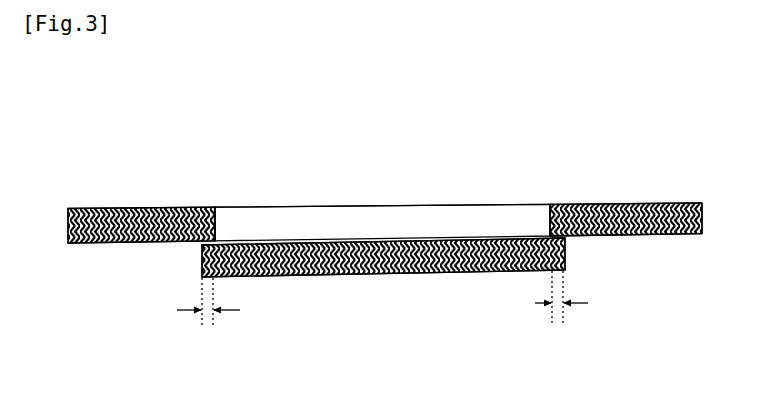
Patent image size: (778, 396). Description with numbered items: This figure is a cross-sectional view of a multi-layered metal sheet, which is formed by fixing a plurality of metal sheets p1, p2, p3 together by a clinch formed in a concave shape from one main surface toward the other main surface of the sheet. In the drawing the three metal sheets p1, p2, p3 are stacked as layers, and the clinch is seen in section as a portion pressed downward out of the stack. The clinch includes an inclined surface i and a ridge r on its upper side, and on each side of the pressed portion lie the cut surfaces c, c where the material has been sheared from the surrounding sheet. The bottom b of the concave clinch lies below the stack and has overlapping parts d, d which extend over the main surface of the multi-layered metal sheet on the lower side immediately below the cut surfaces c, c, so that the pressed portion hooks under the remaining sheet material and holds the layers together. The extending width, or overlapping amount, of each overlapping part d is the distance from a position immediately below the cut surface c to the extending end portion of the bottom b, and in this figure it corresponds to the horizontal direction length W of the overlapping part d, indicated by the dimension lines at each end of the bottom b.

The cut surface c is at (218, 230).
The inclined surface i is at (334, 223).
The ridge r is at (433, 205).
The bottom b is at (364, 283).
The overlapping part d is at (202, 259).
The horizontal direction length of overlapping part W is at (382, 311).
The metal sheet p1 is at (702, 207).
The metal sheet p2 is at (703, 214).
The metal sheet p3 is at (703, 225).